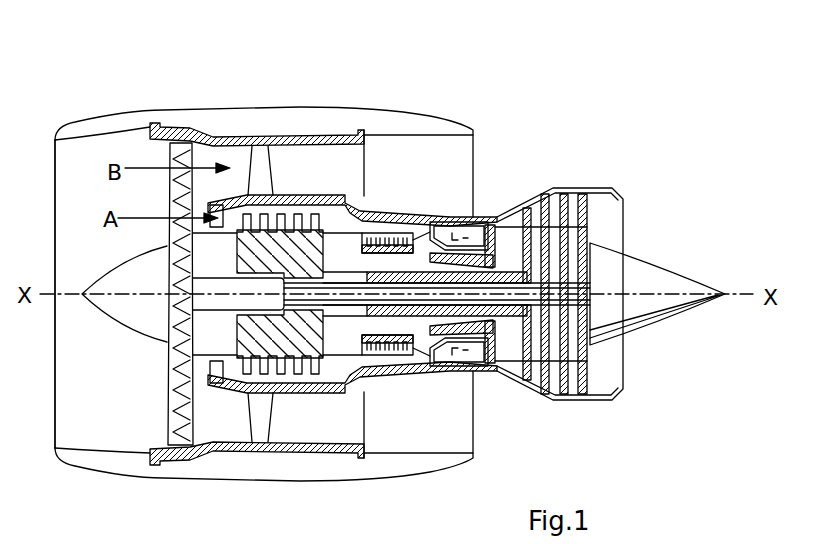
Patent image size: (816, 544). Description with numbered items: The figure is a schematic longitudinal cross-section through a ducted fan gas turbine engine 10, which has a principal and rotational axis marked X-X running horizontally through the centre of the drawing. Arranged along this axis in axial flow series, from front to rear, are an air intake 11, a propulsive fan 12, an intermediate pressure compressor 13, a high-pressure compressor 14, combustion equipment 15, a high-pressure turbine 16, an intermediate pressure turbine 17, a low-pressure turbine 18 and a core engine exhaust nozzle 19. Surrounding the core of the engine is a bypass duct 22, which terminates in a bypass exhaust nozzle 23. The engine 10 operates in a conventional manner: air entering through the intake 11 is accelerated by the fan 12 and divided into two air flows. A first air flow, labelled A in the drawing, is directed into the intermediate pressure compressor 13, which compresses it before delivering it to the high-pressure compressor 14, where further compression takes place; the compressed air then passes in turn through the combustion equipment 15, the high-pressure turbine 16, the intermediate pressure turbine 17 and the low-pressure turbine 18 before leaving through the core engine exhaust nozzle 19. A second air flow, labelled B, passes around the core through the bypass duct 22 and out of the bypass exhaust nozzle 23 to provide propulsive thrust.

The ducted fan gas turbine engine 10 is at (123, 88).
The air intake 11 is at (100, 138).
The propulsive fan 12 is at (175, 402).
The intermediate pressure compressor 13 is at (292, 377).
The high-pressure compressor 14 is at (393, 227).
The combustion equipment 15 is at (427, 363).
The high-pressure turbine 16 is at (488, 372).
The intermediate pressure turbine 17 is at (518, 208).
The low-pressure turbine 18 is at (543, 392).
The core engine exhaust nozzle 19 is at (622, 197).
The bypass duct 22 is at (443, 171).
The bypass exhaust nozzle 23 is at (473, 130).